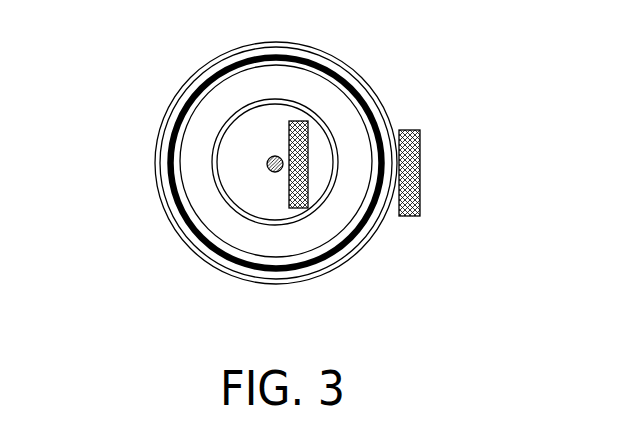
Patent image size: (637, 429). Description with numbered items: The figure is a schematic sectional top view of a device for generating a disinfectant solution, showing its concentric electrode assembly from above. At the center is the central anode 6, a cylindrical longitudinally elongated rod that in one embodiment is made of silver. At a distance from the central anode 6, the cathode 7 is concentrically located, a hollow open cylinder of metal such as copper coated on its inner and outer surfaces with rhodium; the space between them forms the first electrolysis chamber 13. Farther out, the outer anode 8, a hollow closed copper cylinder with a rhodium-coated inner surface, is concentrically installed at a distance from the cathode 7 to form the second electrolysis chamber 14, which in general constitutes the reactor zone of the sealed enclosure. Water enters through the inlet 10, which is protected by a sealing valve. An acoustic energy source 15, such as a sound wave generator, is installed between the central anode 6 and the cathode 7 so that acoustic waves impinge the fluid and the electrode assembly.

The central anode 6 is at (262, 141).
The cathode 7 is at (203, 160).
The outer anode 8 is at (318, 247).
The inlet 10 is at (358, 233).
The first electrolysis chamber 13 is at (310, 160).
The second electrolysis chamber 14 is at (263, 156).
The acoustic energy source 15 is at (323, 108).